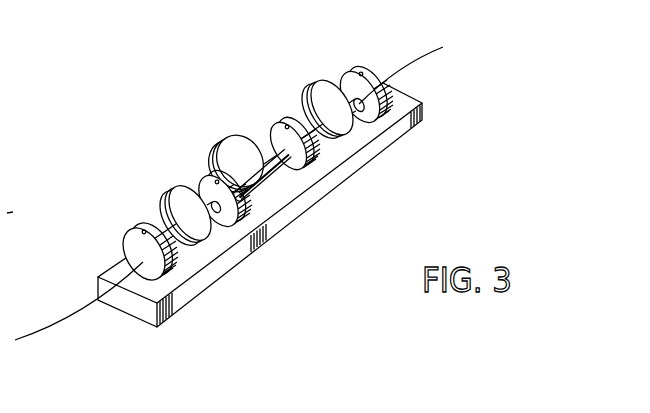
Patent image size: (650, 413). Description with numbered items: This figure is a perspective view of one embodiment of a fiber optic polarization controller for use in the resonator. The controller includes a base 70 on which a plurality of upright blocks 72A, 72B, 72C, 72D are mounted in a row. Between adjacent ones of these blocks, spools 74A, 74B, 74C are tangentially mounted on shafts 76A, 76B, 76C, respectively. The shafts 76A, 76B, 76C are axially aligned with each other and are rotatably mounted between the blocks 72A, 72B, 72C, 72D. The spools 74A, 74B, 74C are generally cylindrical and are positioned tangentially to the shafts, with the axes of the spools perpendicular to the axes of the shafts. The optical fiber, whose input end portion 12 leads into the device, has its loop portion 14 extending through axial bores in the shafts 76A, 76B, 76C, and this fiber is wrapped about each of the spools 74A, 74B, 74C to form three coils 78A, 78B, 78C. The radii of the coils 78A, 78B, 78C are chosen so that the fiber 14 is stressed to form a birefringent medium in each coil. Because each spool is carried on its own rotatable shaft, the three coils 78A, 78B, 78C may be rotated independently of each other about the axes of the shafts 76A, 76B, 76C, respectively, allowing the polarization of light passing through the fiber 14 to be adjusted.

The input end portion 12 is at (421, 60).
The loop portion 14 is at (80, 311).
The base 70 is at (270, 238).
The upright block 72A is at (129, 244).
The upright block 72B is at (252, 237).
The upright block 72C is at (273, 125).
The upright block 72D is at (358, 71).
The spool 74A is at (190, 197).
The spool 74B is at (240, 145).
The spool 74C is at (335, 110).
The shaft 76A is at (213, 216).
The shaft 76B is at (263, 187).
The shaft 76C is at (359, 104).
The coil 78A is at (163, 203).
The coil 78B is at (215, 160).
The coil 78C is at (313, 80).